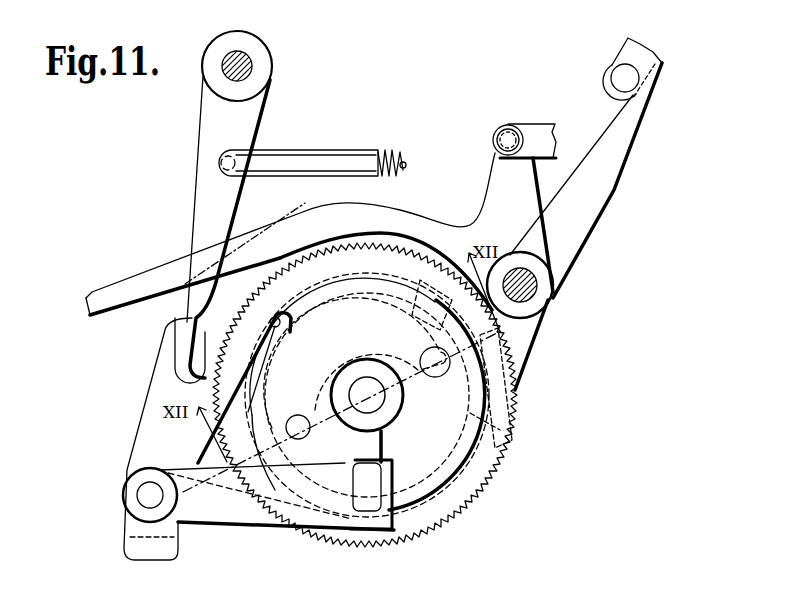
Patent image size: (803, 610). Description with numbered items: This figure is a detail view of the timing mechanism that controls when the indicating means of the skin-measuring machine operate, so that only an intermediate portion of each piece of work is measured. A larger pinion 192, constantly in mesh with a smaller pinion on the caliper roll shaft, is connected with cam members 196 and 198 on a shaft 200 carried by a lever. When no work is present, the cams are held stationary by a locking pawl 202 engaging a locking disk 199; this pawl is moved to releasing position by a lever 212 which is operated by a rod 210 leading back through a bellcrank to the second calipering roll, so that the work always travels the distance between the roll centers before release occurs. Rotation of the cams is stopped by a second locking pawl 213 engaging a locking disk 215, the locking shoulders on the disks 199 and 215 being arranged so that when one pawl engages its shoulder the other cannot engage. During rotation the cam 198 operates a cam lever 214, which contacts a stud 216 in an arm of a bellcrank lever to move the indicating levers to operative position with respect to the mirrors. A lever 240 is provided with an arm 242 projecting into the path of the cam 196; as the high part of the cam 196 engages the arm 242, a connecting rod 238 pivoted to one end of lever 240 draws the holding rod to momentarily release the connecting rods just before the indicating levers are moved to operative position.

The pinion 192 is at (462, 485).
The cam member 196 is at (433, 285).
The cam member 198 is at (365, 268).
The locking disk 199 is at (262, 382).
The shaft 200 is at (433, 443).
The locking pawl 202 is at (153, 398).
The rod 210 is at (300, 167).
The lever 212 is at (205, 206).
The locking pawl 213 is at (220, 524).
The cam lever 214 is at (600, 197).
The locking disk 215 is at (313, 528).
The stud 216 is at (607, 79).
The connecting rod 238 is at (550, 120).
The lever 240 is at (503, 196).
The arm 242 is at (505, 452).